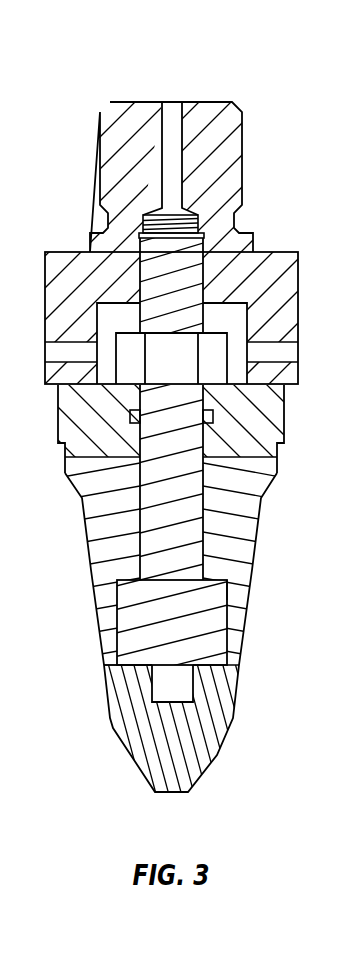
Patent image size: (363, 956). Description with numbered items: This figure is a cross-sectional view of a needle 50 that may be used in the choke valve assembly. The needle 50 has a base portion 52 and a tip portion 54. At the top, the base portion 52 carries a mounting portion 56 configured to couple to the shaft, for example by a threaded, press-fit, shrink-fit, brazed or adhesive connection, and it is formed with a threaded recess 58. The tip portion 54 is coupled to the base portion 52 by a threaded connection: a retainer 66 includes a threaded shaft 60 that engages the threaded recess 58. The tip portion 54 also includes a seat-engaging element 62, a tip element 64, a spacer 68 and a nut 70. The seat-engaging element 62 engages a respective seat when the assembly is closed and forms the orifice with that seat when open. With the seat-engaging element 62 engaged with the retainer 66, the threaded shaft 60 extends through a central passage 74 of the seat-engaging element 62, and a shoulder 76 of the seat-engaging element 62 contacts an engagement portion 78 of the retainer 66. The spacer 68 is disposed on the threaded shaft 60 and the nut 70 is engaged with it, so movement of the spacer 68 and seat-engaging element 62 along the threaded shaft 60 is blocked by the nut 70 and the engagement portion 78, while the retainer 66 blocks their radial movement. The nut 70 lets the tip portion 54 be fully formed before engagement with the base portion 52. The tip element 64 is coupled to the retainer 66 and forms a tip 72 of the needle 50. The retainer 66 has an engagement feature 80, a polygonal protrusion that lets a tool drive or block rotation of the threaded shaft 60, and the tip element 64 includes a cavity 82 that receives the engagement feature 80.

The needle 50 is at (254, 614).
The base portion 52 is at (288, 292).
The tip portion 54 is at (261, 556).
The mounting portion 56 is at (222, 131).
The threaded recess 58 is at (199, 221).
The threaded shaft 60 is at (187, 255).
The seat-engaging element 62 is at (237, 525).
The tip element 64 is at (212, 722).
The retainer 66 is at (207, 658).
The spacer 68 is at (82, 413).
The nut 70 is at (123, 347).
The tip 72 is at (170, 793).
The central passage 74 is at (200, 479).
The shoulder 76 is at (213, 580).
The engagement portion 78 is at (222, 592).
The engagement feature 80 is at (158, 680).
The cavity 82 is at (187, 703).